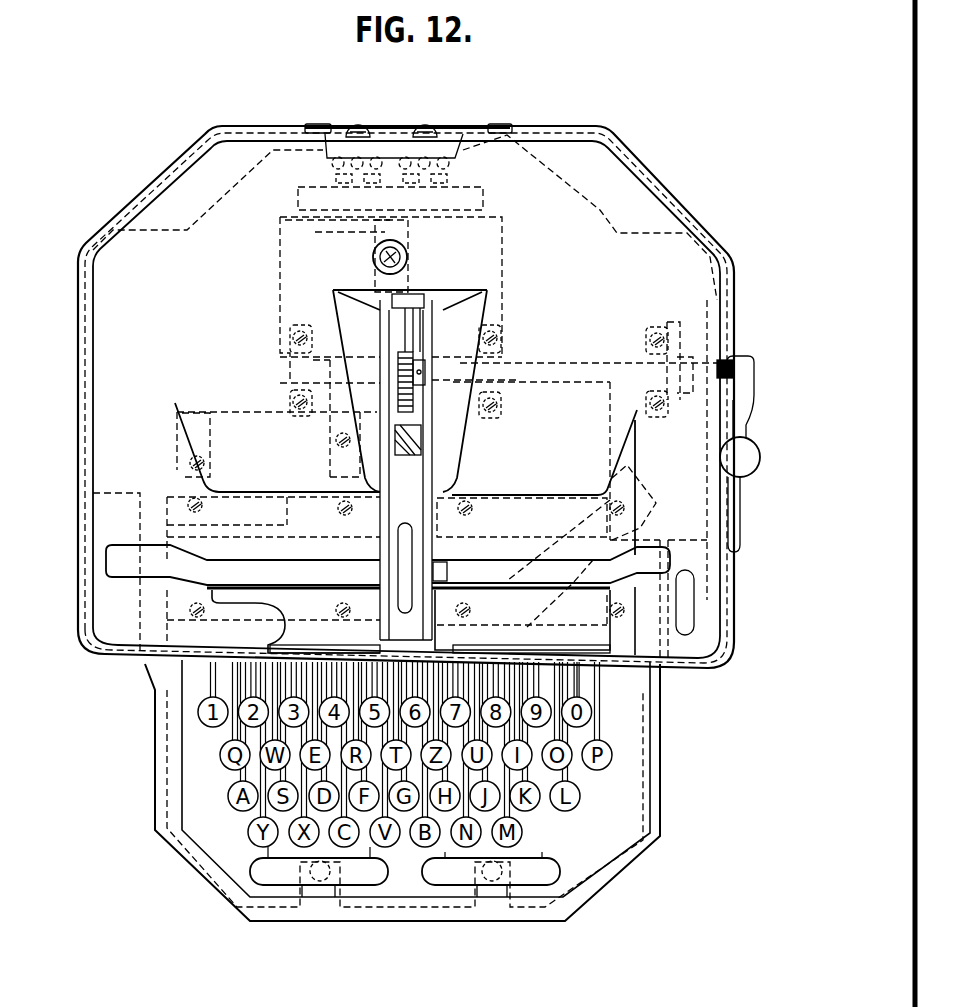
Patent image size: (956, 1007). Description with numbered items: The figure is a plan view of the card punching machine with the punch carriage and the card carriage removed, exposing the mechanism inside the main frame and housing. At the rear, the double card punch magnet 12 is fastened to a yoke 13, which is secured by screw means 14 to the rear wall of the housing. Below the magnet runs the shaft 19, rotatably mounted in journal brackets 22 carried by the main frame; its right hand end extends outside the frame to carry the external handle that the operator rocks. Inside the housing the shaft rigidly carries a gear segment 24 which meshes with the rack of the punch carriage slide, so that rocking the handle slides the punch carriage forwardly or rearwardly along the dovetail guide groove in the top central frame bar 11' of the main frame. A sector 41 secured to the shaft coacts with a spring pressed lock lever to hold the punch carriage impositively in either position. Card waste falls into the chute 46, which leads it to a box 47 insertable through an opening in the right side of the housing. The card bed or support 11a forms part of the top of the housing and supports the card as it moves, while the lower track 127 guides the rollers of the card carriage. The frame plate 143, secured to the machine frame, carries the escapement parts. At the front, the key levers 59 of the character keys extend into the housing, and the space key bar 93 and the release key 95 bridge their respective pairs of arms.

The top central frame bar 11' is at (440, 471).
The card bed or support 11a is at (255, 552).
The double card punch magnet 12 is at (373, 235).
The yoke 13 is at (465, 192).
The screw means 14 is at (413, 168).
The shaft 19 is at (577, 366).
The journal brackets 22 is at (292, 385).
The gear segment 24 is at (413, 402).
The sector 41 is at (678, 346).
The chute 46 is at (656, 503).
The box 47 is at (688, 483).
The key levers 59 is at (598, 712).
The space key bar 93 is at (287, 878).
The release key 95 is at (530, 878).
The lower track 127 is at (257, 530).
The frame plate 143 is at (263, 420).